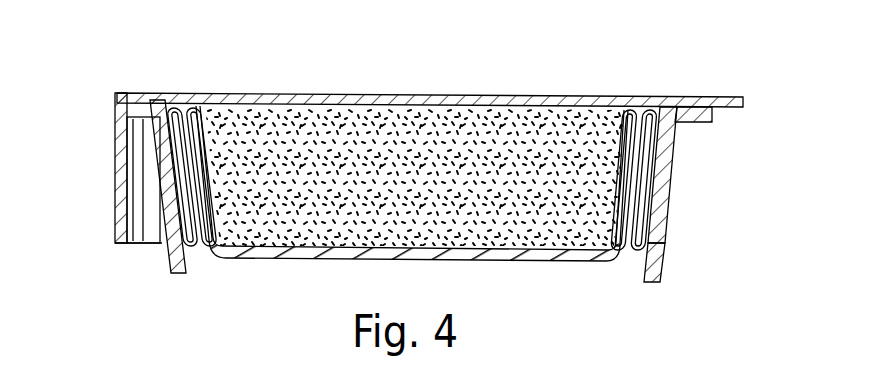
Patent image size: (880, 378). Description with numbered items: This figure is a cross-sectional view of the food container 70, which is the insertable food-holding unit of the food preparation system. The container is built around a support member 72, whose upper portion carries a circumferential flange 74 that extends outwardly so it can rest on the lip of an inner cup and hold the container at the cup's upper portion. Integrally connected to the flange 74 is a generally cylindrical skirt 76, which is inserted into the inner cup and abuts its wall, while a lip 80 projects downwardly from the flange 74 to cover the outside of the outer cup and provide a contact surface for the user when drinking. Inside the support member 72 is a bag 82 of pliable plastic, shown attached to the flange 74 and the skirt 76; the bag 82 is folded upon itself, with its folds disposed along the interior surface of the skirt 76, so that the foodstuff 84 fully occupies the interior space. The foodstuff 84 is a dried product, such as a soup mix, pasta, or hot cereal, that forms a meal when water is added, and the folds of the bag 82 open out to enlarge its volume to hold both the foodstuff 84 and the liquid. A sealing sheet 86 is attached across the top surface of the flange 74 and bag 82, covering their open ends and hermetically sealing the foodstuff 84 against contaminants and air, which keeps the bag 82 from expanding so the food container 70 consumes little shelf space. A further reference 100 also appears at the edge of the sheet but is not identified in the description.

The food container 70 is at (447, 82).
The support member 72 is at (676, 217).
The flange 74 is at (712, 118).
The skirt 76 is at (662, 243).
The lip 80 is at (118, 208).
The bag 82 is at (576, 258).
The foodstuff 84 is at (288, 205).
The sealing sheet 86 is at (657, 100).
The assembly 100 is at (98, 377).